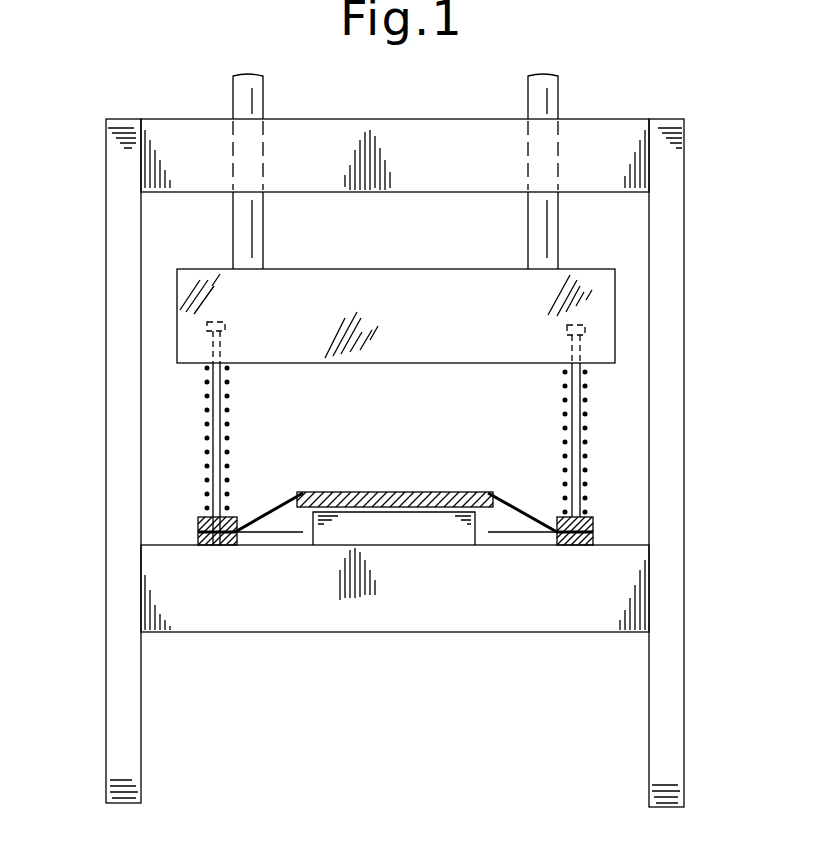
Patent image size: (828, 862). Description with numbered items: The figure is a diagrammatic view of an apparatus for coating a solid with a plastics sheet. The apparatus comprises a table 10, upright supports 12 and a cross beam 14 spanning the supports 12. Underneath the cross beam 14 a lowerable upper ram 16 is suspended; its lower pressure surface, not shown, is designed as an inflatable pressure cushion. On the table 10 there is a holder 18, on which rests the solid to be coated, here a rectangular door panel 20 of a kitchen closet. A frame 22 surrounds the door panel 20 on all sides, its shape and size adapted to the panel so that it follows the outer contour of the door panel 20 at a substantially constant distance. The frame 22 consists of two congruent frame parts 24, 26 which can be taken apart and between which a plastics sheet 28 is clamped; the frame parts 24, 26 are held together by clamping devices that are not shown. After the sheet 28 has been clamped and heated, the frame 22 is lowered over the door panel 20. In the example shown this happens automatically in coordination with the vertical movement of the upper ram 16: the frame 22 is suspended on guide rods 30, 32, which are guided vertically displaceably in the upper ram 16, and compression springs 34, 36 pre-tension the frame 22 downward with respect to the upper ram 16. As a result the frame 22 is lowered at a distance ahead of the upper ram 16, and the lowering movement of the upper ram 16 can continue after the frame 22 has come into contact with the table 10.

The table 10 is at (415, 610).
The supports 12 is at (108, 510).
The cross beam 14 is at (610, 131).
The upper ram 16 is at (391, 280).
The holder 18 is at (348, 528).
The door panel 20 is at (437, 512).
The frame 22 is at (595, 518).
The frame part 24 is at (198, 517).
The frame part 26 is at (214, 546).
The plastics sheet 28 is at (285, 502).
The guide rod 30 is at (212, 398).
The guide rod 32 is at (576, 390).
The compression spring 34 is at (207, 438).
The compression spring 36 is at (581, 437).